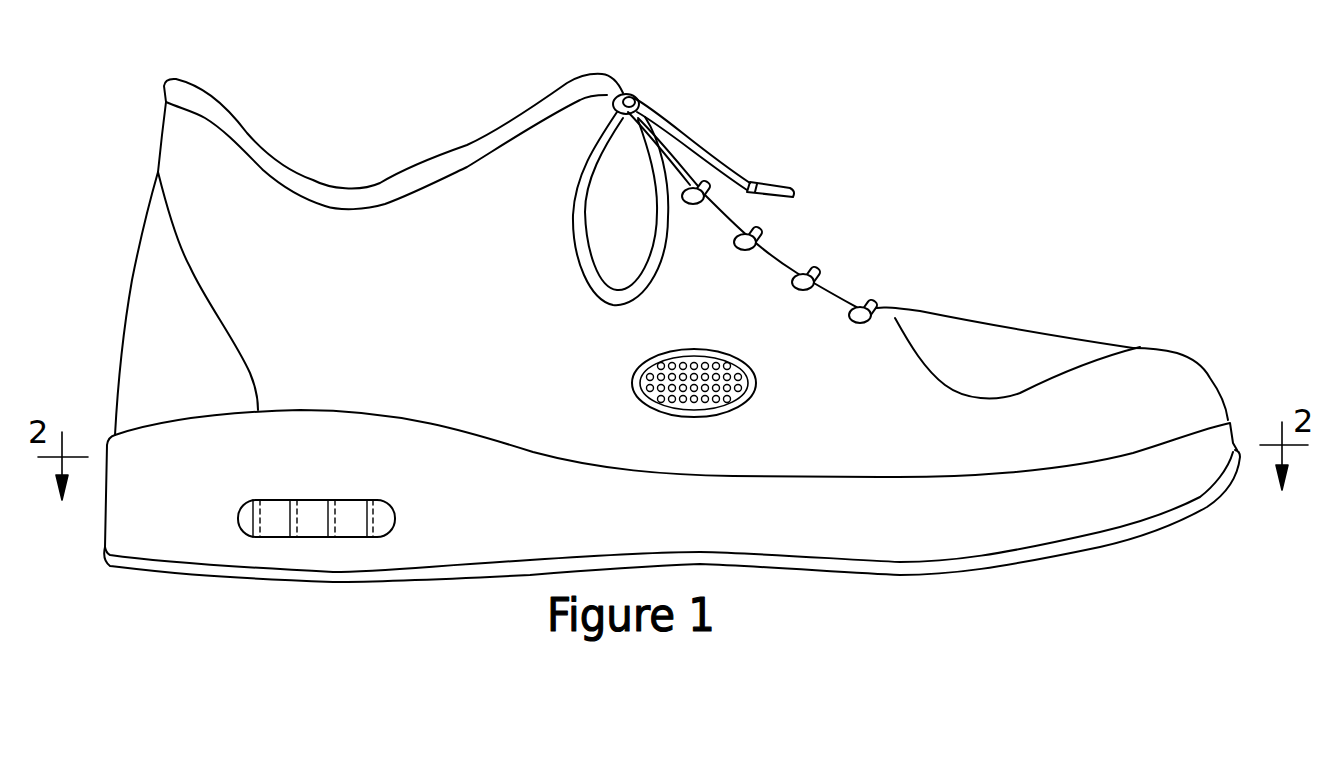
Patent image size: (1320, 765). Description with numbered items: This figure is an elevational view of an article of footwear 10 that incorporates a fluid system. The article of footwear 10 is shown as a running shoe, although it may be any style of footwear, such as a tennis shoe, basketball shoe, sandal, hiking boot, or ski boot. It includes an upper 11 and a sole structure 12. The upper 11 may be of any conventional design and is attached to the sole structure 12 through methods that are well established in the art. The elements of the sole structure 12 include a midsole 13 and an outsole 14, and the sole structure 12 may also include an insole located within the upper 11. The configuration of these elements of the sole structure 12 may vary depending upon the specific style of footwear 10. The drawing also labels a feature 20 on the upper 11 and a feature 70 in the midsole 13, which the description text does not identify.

The article of footwear 10 is at (930, 138).
The upper 11 is at (735, 200).
The sole structure 12 is at (998, 576).
The midsole 13 is at (418, 442).
The outsole 14 is at (337, 573).
The vent 20 is at (712, 350).
The window 70 is at (313, 510).